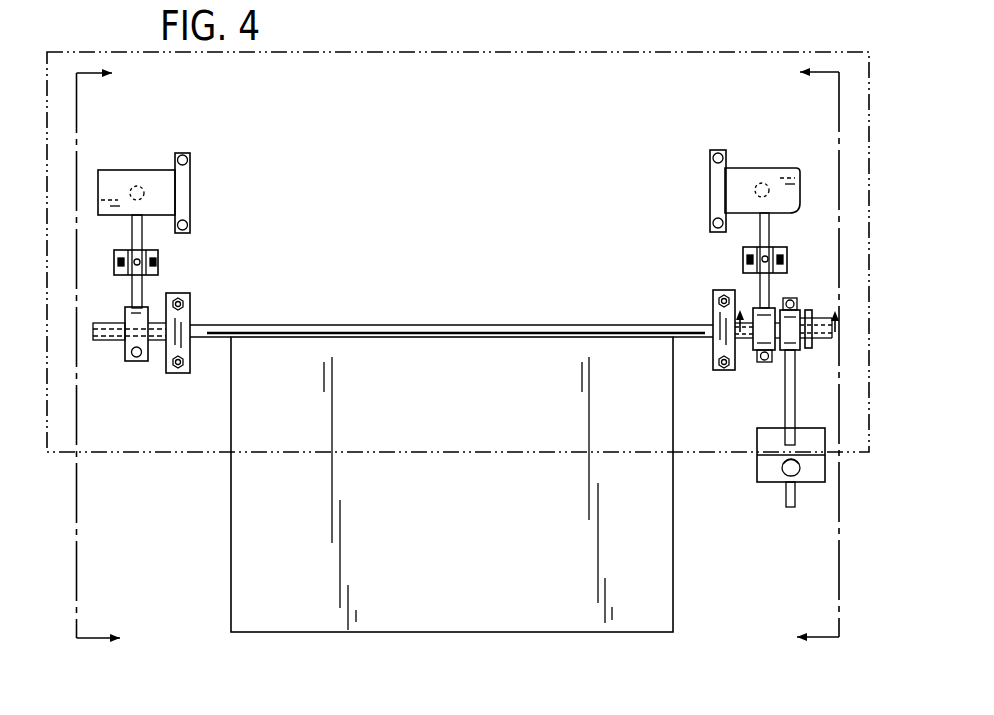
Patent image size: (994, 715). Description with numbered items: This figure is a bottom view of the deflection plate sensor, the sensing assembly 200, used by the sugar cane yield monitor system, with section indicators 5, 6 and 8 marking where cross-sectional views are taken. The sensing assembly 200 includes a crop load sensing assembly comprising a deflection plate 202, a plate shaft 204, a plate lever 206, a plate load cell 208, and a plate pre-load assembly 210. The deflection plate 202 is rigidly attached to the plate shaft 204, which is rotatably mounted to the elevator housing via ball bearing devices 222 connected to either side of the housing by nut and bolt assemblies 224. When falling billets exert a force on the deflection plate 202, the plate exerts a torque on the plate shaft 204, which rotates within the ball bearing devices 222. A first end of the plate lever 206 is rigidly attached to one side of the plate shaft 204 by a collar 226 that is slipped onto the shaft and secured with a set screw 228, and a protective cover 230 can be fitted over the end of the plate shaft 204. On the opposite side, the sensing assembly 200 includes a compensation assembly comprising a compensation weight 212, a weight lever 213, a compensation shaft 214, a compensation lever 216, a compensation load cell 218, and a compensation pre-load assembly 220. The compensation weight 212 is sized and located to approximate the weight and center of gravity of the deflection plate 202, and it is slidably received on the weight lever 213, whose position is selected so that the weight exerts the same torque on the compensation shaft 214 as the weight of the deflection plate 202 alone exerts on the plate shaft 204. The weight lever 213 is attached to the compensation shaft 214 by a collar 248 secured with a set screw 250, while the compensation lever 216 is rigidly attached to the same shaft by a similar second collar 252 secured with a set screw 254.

The sensing assembly 200 is at (160, 652).
The deflection plate 202 is at (482, 547).
The plate shaft 204 is at (248, 332).
The plate lever 206 is at (143, 233).
The plate load cell 208 is at (107, 170).
The plate pre-load assembly 210 is at (160, 258).
The compensation weight 212 is at (825, 468).
The weight lever 213 is at (795, 425).
The compensation shaft 214 is at (804, 351).
The compensation lever 216 is at (773, 223).
The compensation load cell 218 is at (733, 167).
The compensation pre-load assembly 220 is at (773, 250).
The ball bearing devices 222 is at (182, 294).
The nut and bolt assemblies 224 is at (187, 305).
The collar 226 is at (124, 352).
The set screw 228 is at (138, 356).
The protective cover 230 is at (112, 322).
The collar 248 is at (778, 310).
The set screw 250 is at (788, 297).
The second collar 252 is at (752, 350).
The set screw 254 is at (765, 361).
The section line 5- 5 is at (88, 361).
The section line 6- 6 is at (829, 361).
The section line 8- 8 is at (787, 306).